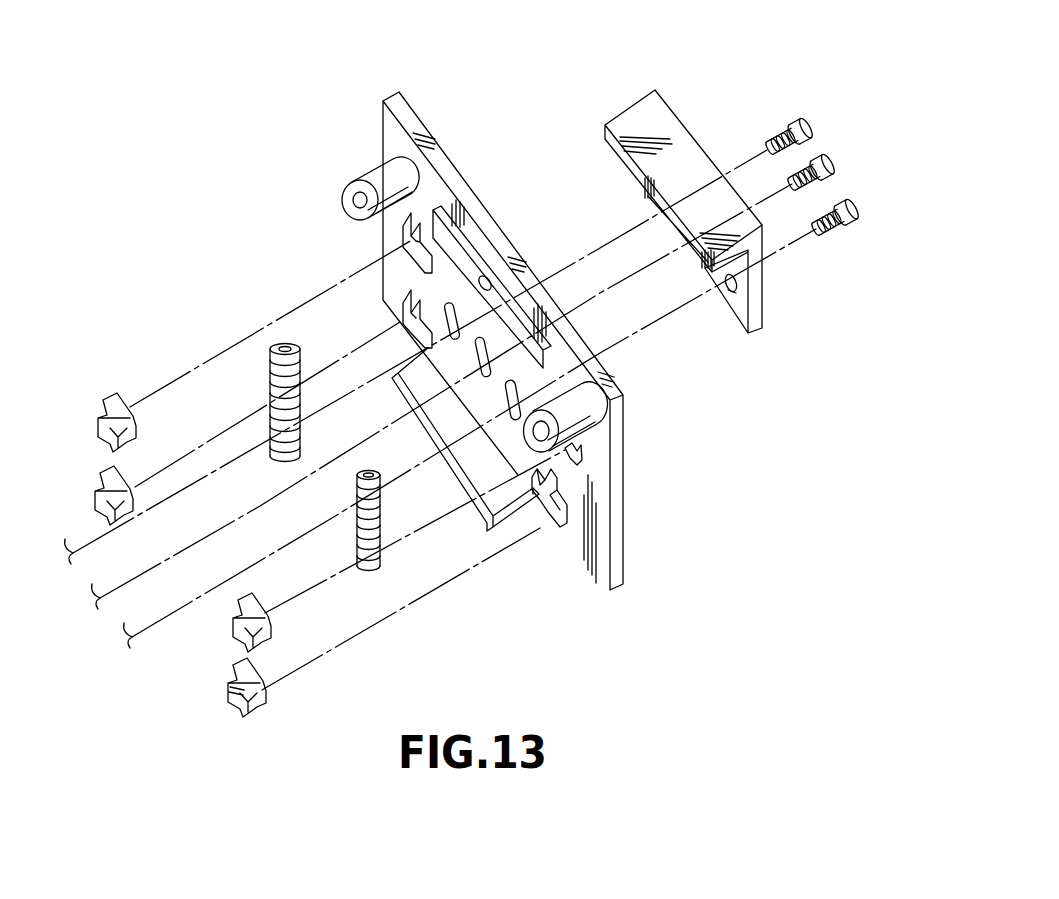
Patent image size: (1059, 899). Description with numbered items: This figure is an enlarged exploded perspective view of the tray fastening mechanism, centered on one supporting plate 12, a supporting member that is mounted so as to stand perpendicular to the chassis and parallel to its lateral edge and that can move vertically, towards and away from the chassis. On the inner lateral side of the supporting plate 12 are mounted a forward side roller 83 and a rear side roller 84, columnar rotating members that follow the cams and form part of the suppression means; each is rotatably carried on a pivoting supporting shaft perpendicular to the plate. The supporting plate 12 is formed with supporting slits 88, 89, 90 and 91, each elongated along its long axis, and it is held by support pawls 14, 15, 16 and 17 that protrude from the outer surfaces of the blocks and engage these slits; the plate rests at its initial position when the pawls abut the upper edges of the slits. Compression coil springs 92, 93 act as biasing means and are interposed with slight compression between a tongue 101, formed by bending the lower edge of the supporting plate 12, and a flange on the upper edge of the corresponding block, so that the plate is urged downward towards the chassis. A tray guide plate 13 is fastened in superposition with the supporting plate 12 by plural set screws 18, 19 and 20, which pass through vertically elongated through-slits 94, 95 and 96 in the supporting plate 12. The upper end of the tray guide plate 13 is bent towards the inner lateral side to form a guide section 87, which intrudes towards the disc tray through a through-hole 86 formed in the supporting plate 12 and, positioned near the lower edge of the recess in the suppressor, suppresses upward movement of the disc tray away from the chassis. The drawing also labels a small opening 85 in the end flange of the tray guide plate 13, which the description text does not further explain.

The supporting plate 12 is at (628, 545).
The tray guide plate 13 is at (678, 206).
The support pawl 14 is at (267, 617).
The support pawl 15 is at (262, 695).
The support pawl 16 is at (106, 399).
The support pawl 17 is at (104, 472).
The set screw 18 is at (846, 201).
The set screw 19 is at (818, 153).
The set screw 20 is at (792, 122).
The forward side roller 83 is at (590, 425).
The rear side roller 84 is at (373, 177).
The hole 85 is at (731, 293).
The through-hole 86 is at (482, 279).
The guide section 87 is at (635, 113).
The supporting slit 88 is at (577, 458).
The supporting slit 89 is at (562, 527).
The supporting slit 90 is at (402, 236).
The supporting slit 91 is at (400, 320).
The compression coil spring 92 is at (384, 532).
The compression coil spring 93 is at (270, 363).
The through-slit 94 is at (530, 383).
The through-slit 95 is at (484, 338).
The through-slit 96 is at (445, 300).
The tongue 101 is at (507, 513).